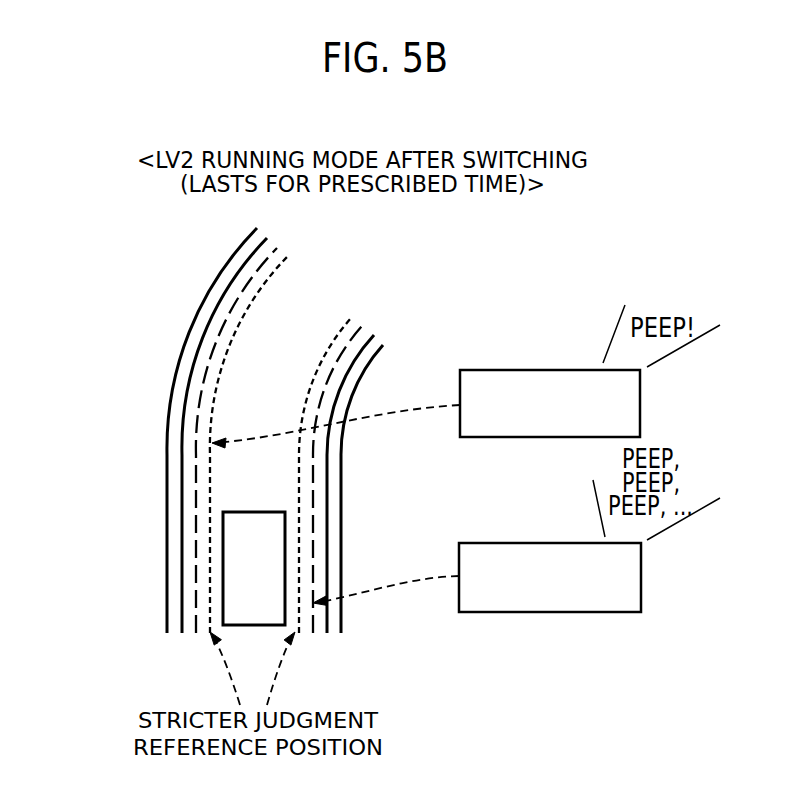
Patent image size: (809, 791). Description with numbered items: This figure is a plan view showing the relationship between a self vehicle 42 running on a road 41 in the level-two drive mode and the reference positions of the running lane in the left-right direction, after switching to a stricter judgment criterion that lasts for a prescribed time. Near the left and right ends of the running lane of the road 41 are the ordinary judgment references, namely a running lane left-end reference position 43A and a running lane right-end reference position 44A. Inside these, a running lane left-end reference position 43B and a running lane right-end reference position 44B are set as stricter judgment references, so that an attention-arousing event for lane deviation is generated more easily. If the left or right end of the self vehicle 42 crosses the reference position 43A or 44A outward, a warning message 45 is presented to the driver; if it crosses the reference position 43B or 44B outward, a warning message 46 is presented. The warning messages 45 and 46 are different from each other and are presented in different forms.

The road 41 is at (178, 390).
The self vehicle 42 is at (223, 588).
The running lane left-end reference position 43A is at (196, 513).
The running lane left-end reference position 43B is at (210, 543).
The running lane right-end reference position 44A is at (313, 507).
The running lane right-end reference position 44B is at (299, 543).
The warning message 45 is at (520, 543).
The warning message 46 is at (520, 370).